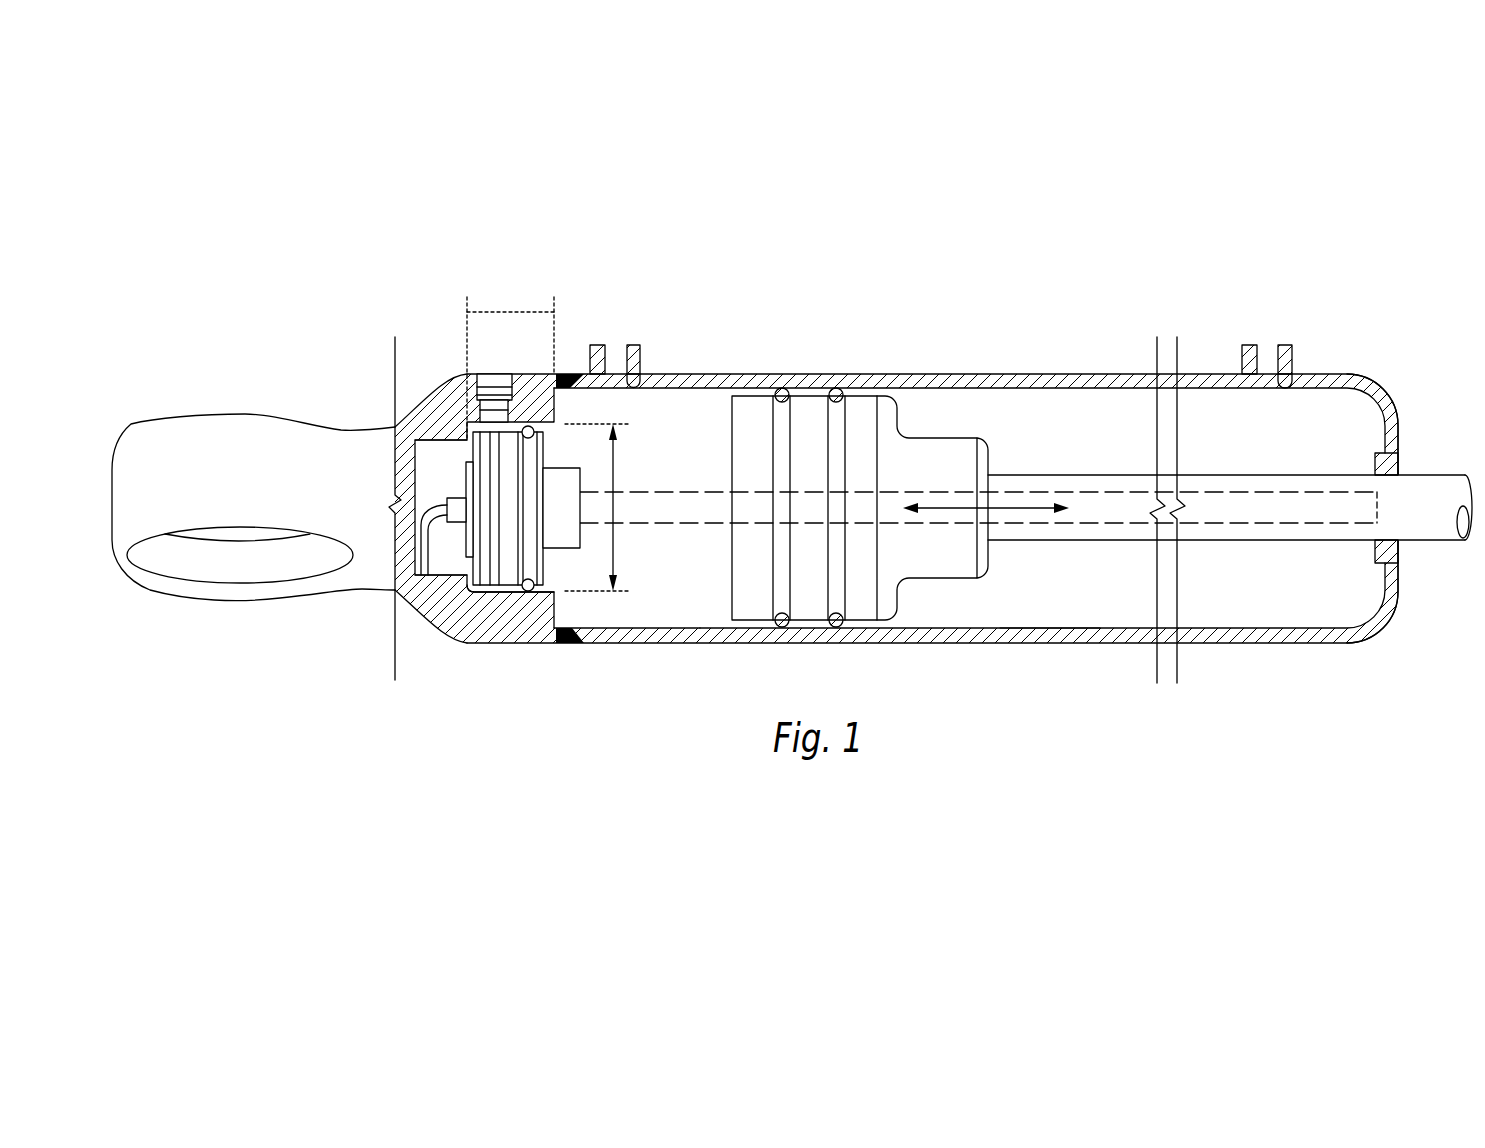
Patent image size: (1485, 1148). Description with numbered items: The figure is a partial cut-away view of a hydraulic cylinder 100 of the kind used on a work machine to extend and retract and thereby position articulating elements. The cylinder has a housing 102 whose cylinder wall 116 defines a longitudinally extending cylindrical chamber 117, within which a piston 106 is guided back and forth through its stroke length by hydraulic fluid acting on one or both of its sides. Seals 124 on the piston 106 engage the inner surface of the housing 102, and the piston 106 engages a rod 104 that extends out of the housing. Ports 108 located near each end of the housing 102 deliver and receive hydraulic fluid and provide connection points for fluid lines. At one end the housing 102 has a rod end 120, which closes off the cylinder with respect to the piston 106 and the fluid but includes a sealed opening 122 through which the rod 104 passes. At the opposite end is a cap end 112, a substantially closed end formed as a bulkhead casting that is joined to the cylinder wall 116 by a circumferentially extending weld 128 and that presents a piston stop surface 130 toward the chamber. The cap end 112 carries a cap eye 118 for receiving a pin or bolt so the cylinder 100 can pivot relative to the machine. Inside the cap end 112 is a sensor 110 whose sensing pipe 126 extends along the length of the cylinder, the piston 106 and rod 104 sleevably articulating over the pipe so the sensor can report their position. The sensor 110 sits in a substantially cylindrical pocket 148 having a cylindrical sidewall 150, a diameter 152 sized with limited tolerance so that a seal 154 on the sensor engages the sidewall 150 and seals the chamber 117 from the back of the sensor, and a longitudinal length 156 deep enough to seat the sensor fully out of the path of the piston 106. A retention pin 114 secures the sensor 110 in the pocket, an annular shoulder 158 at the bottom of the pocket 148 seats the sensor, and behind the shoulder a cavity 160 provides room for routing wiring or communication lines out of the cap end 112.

The hydraulic cylinder 100 is at (1367, 268).
The housing 102 is at (918, 644).
The rod 104 is at (1424, 532).
The piston 106 is at (853, 605).
The ports 108 is at (615, 349).
The sensor 110 is at (490, 592).
The cap end 112 is at (355, 371).
The retention pin 114 is at (498, 373).
The cylinder wall 116 is at (1047, 640).
The cylindrical chamber 117 is at (1069, 585).
The cap eye 118 is at (179, 620).
The rod end 120 is at (1380, 640).
The sealed opening 122 is at (1399, 469).
The seals 124 is at (784, 386).
The sensing pipe 126 is at (690, 510).
The weld 128 is at (607, 640).
The piston stop surface 130 is at (557, 612).
The pocket 148 is at (583, 568).
The cylindrical sidewall 150 is at (530, 592).
The diameter 152 is at (615, 465).
The seal 154 is at (512, 572).
The longitudinal length 156 is at (512, 306).
The shoulder 158 is at (448, 600).
The cavity 160 is at (440, 477).